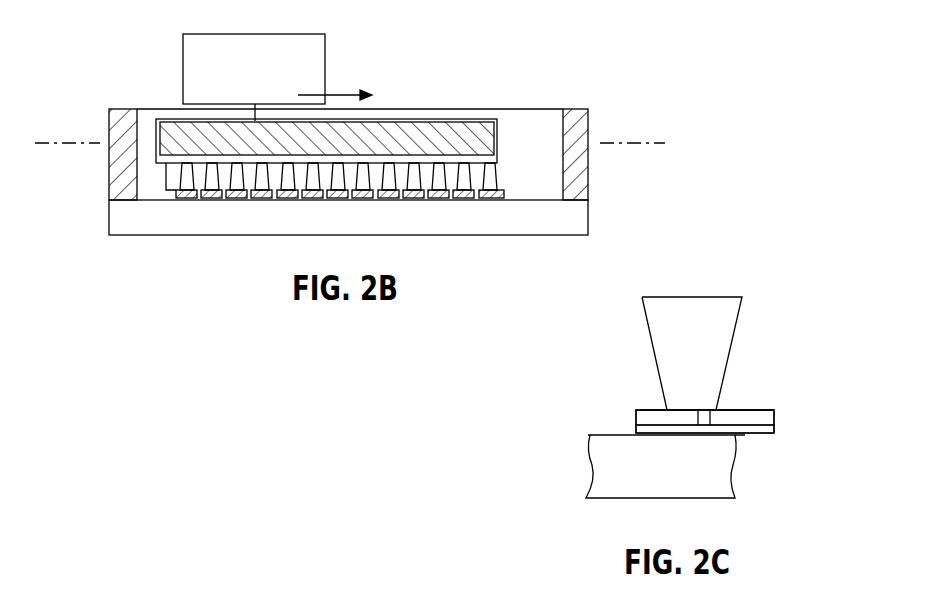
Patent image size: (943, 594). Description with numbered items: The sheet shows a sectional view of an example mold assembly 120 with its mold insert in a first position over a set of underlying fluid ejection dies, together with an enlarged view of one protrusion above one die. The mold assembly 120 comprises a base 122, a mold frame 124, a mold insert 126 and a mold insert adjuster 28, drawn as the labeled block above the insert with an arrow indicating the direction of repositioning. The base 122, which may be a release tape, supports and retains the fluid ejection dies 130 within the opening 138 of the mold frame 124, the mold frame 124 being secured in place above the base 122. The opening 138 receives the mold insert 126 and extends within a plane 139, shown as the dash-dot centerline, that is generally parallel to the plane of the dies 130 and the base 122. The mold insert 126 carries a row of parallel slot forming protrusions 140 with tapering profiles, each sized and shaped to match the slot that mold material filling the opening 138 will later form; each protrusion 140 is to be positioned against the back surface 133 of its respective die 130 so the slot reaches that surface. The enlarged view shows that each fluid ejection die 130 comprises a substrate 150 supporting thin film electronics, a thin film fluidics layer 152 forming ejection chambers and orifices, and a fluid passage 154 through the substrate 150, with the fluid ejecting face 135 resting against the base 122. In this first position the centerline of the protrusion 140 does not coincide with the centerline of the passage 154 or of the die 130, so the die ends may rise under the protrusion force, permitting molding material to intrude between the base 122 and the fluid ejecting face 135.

In FIG. 2B, the mold insert adjuster 28 is at (285, 34).
In FIG. 2B, the mold assembly 120 is at (92, 82).
In FIG. 2B, the base 122 is at (108, 218).
In FIG. 2C, the base 122 is at (595, 460).
In FIG. 2B, the mold frame 124 is at (583, 100).
In FIG. 2B, the mold insert 126 is at (440, 128).
In FIG. 2C, the mold insert 126 is at (752, 320).
In FIG. 2B, the fluid ejection die 130 is at (175, 192).
In FIG. 2C, the fluid ejection die 130 is at (622, 417).
In FIG. 2C, the back surface 133 is at (745, 410).
In FIG. 2C, the fluid ejecting face 135 is at (752, 436).
In FIG. 2B, the opening 138 is at (560, 132).
In FIG. 2B, the plane 139 is at (76, 143).
In FIG. 2B, the slot forming protrusion 140 is at (176, 183).
In FIG. 2C, the slot forming protrusion 140 is at (651, 341).
In FIG. 2C, the substrate 150 is at (774, 418).
In FIG. 2C, the thin film fluidics layer 152 is at (776, 433).
In FIG. 2C, the fluid passage 154 is at (697, 418).